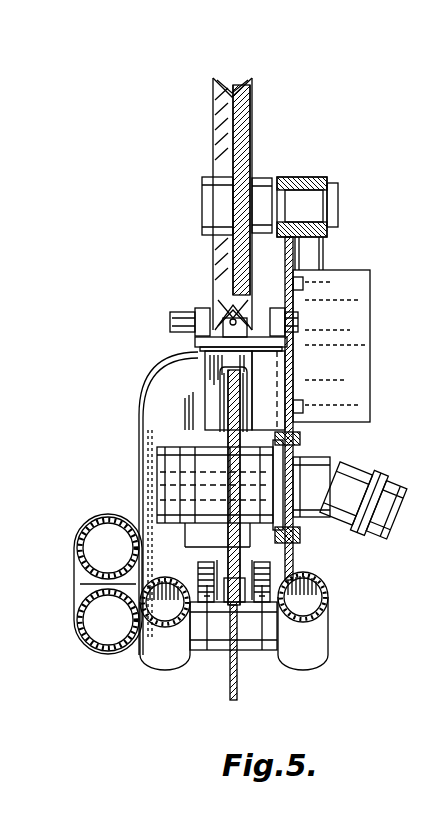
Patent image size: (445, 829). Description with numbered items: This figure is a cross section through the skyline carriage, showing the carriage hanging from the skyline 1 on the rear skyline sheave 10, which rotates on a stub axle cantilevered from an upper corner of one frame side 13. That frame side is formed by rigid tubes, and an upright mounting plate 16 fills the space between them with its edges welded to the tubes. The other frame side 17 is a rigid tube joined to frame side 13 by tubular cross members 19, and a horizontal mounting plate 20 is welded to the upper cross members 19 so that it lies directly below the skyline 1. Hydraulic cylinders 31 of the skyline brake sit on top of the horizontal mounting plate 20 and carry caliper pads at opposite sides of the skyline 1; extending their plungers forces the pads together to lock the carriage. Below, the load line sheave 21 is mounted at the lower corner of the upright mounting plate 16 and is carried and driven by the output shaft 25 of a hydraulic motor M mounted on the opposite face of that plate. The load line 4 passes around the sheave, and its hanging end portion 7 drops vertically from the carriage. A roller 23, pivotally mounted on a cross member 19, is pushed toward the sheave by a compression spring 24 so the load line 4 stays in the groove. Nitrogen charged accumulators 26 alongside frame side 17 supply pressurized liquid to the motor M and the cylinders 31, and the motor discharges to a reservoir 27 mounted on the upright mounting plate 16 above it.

The skyline 1 is at (232, 318).
The load line 4 is at (205, 378).
The hanging end portion 7 is at (238, 685).
The skyline sheave 10 is at (246, 116).
The frame side 13 is at (320, 248).
The upright mounting plate 16 is at (295, 368).
The frame side 17 is at (155, 413).
The tubular cross members 19 is at (218, 623).
The horizontal mounting plate 20 is at (195, 345).
The load line sheave 21 is at (178, 445).
The roller 23 is at (267, 560).
The compression spring 24 is at (182, 583).
The output shaft 25 is at (150, 473).
The accumulators 26 is at (95, 553).
The reservoir 27 is at (355, 310).
The hydraulic cylinders 31 is at (180, 310).
The hydraulic motor M is at (385, 465).